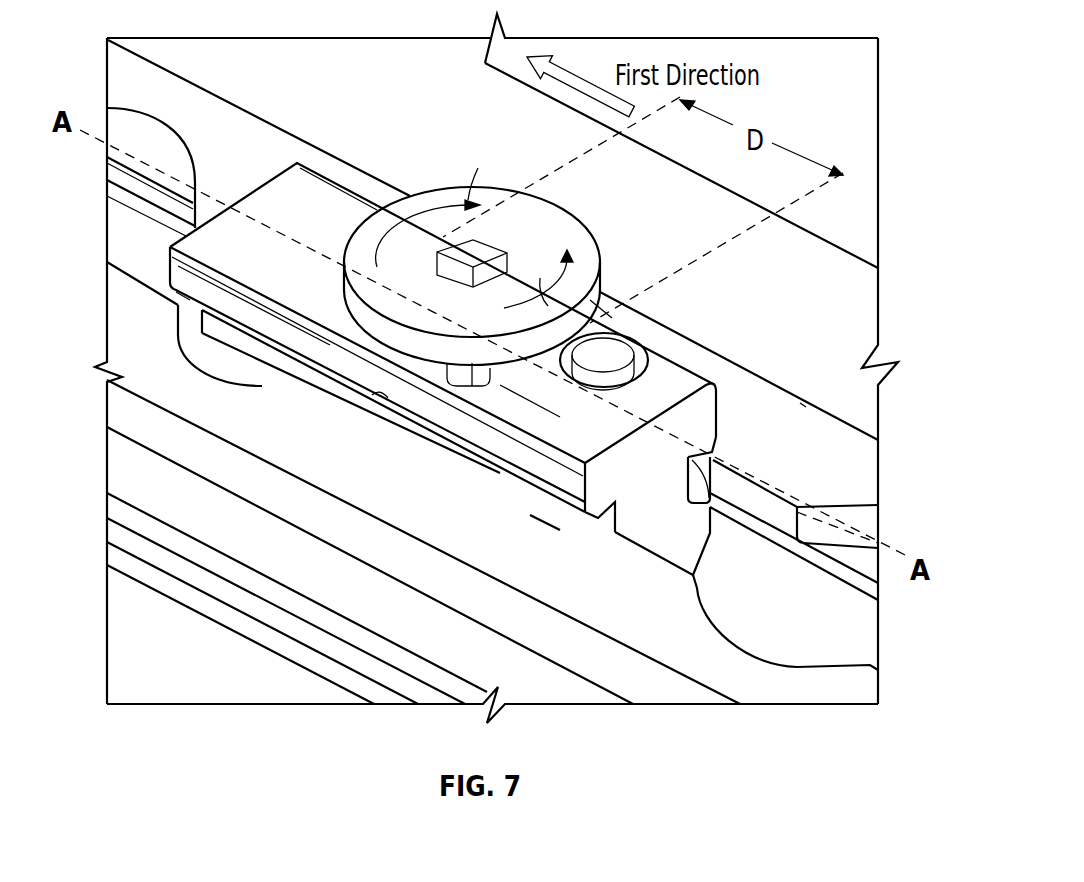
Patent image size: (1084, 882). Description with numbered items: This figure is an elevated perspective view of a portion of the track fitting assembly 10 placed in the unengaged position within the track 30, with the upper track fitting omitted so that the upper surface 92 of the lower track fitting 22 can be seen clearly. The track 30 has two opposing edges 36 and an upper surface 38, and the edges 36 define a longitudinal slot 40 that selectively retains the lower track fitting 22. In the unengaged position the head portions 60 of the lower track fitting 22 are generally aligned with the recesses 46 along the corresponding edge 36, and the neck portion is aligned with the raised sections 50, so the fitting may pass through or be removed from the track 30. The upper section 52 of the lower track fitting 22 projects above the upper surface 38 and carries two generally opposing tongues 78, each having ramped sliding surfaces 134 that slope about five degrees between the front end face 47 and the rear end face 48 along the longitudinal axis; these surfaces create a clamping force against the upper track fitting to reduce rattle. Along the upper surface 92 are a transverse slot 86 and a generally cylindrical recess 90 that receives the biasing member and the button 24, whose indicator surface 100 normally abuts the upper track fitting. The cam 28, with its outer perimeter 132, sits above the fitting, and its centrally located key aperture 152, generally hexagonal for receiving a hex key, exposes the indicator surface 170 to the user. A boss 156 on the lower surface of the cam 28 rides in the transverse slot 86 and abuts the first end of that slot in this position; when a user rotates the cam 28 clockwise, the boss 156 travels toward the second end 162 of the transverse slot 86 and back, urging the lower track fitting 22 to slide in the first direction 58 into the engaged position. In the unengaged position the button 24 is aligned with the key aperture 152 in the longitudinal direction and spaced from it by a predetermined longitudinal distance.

The track fitting assembly 10 is at (233, 64).
The lower track fitting 22 is at (330, 180).
The button 24 is at (637, 373).
The cam 28 is at (437, 190).
The track 30 is at (303, 440).
The opposing edges 36 is at (727, 632).
The upper surface 38 is at (801, 407).
The longitudinal slot 40 is at (805, 643).
The recesses 46 is at (256, 387).
The front end face 47 is at (667, 515).
The rear end face 48 is at (237, 208).
The raised sections 50 is at (380, 398).
The upper section 52 is at (718, 384).
The first direction 58 is at (585, 70).
The head portions 60 is at (500, 500).
The tongues 78 is at (707, 420).
The transverse slot 86 is at (505, 410).
The recess 90 is at (714, 402).
The upper surface 92 is at (281, 213).
The indicator surface 100 is at (627, 360).
The outer perimeter 132 is at (603, 300).
The sliding surfaces 134 is at (755, 477).
The key aperture 152 is at (455, 277).
The boss 156 is at (480, 380).
The second end 162 is at (443, 378).
The indicator surface 170 is at (480, 253).